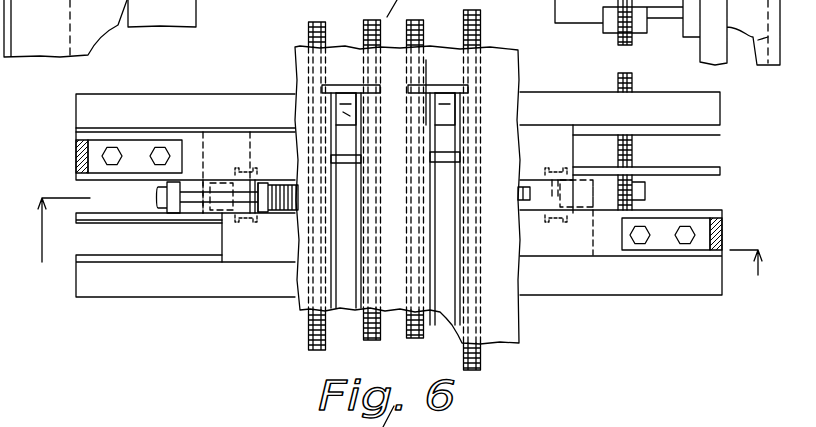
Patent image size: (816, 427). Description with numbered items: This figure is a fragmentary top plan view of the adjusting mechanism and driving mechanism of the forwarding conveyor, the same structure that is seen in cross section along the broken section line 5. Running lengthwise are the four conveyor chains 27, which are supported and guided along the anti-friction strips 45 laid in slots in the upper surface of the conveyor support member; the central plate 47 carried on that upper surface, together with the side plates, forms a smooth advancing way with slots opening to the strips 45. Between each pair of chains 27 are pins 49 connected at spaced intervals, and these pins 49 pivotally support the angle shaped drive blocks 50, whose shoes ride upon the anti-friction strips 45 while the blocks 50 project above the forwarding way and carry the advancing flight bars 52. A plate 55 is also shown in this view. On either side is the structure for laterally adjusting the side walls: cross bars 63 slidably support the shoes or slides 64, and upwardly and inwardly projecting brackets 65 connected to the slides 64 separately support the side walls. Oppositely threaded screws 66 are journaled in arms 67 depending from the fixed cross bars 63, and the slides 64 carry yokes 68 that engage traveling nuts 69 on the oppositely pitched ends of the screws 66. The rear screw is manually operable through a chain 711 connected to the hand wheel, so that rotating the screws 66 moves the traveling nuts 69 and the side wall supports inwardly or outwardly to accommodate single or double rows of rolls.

The section line 5 is at (397, 250).
The chains 27 is at (364, 25).
The anti-friction strips 45 is at (352, 298).
The central plate 47 is at (428, 62).
The pins 49 is at (360, 128).
The drive blocks 50 is at (445, 117).
The flight bars 52 is at (342, 87).
The mounting plate 55 is at (300, 70).
The cross bars 63 is at (178, 287).
The slides 64 is at (248, 252).
The brackets 65 is at (76, 143).
The oppositely threaded screws 66 is at (282, 183).
The arms 67 is at (203, 200).
The yokes 68 is at (249, 172).
The traveling nuts 69 is at (263, 204).
The chain 711 is at (624, 45).